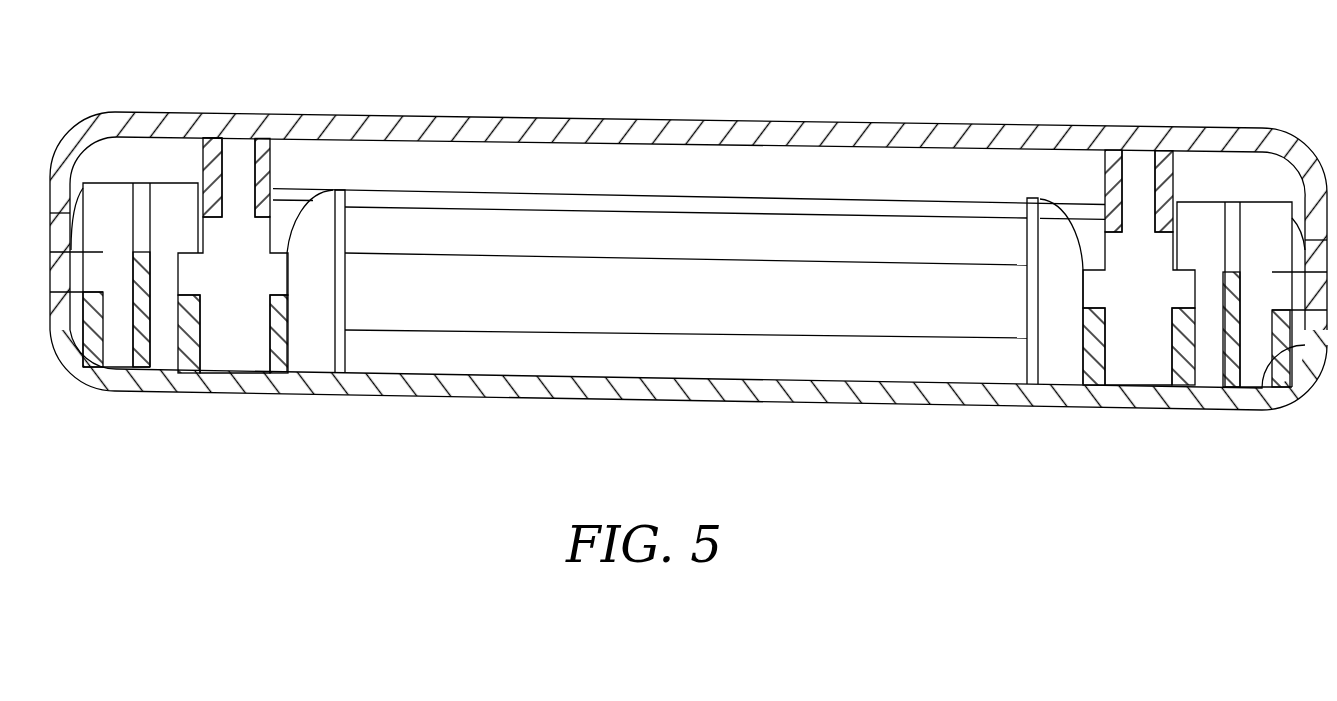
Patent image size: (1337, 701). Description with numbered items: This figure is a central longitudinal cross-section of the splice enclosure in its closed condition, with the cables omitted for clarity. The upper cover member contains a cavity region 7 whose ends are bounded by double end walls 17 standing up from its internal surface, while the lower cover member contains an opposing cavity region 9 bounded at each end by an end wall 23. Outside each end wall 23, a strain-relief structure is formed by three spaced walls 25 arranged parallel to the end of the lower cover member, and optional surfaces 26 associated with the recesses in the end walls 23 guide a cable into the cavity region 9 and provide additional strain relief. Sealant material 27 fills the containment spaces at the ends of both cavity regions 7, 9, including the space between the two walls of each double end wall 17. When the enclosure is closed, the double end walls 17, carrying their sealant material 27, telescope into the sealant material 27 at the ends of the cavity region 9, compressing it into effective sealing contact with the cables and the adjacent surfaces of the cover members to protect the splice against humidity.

The cavity region 7 is at (657, 162).
The cavity region 9 is at (653, 358).
The double end walls 17 is at (203, 162).
The end wall 23 is at (282, 333).
The spaced walls 25 is at (185, 350).
The surfaces 26 is at (320, 305).
The sealant material 27 is at (233, 163).